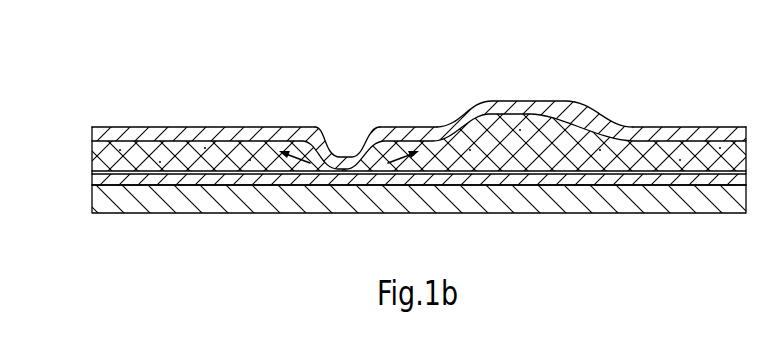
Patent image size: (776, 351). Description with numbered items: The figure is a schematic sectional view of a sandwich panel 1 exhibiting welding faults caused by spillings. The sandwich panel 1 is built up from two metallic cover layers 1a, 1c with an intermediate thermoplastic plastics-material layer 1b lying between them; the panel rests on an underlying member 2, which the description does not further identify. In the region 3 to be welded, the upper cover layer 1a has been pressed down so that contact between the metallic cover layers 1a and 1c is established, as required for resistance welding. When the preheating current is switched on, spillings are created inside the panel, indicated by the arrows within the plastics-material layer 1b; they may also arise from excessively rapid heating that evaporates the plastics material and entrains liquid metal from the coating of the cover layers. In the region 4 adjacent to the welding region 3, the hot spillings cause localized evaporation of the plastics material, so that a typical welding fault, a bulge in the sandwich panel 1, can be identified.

The sandwich panel 1 is at (202, 111).
The metallic cover layer 1a is at (112, 138).
The intermediate thermoplastic plastics-material layer 1b is at (107, 153).
The metallic cover layer 1c is at (103, 178).
The substrate 2 is at (128, 205).
The region to be welded 3 is at (393, 92).
The region adjacent to the welding region 4 is at (637, 92).